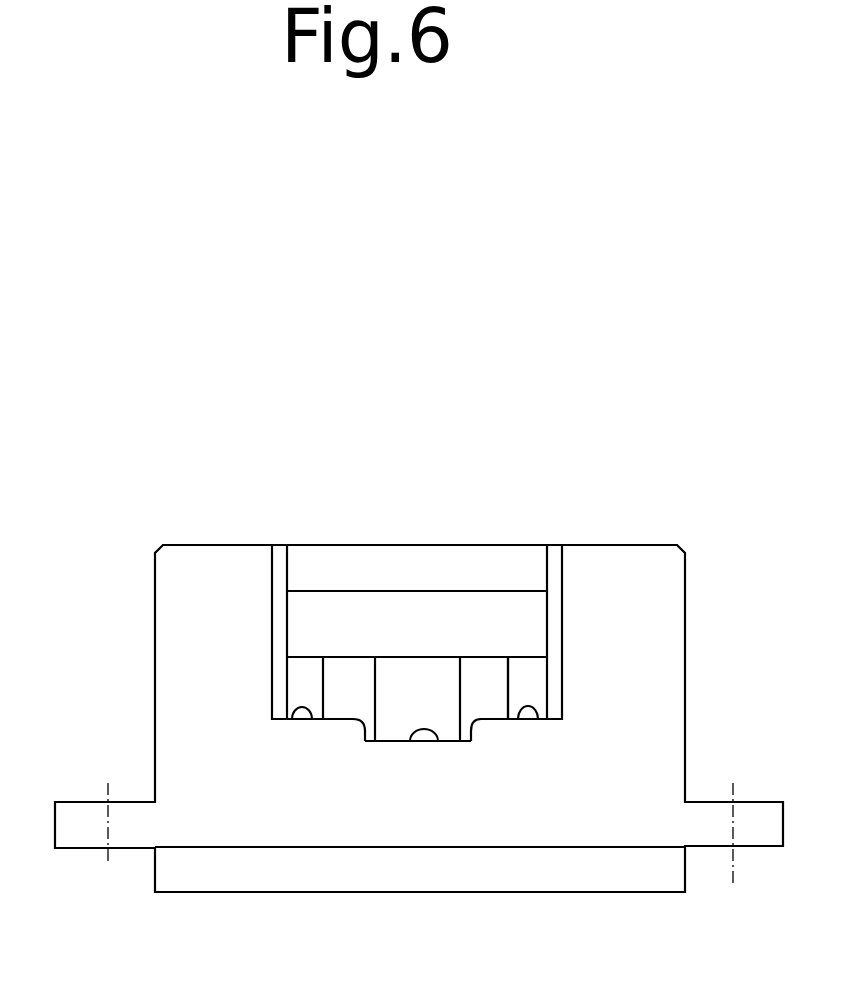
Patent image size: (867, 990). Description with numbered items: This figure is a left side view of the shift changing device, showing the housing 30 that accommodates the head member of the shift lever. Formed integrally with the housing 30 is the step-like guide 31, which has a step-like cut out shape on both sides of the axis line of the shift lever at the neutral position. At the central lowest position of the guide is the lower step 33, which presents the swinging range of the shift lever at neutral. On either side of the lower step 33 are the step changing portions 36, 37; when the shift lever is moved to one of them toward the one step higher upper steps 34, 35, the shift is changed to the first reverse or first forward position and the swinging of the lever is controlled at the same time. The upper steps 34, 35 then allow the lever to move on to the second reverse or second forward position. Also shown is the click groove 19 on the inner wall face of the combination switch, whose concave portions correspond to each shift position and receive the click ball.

The housing 30 is at (218, 553).
The step-like guide 31 is at (413, 703).
The click groove 19 is at (471, 688).
The lower step 33 is at (432, 745).
The upper step 34 is at (293, 720).
The upper step 35 is at (544, 721).
The step changing portion 36 is at (360, 737).
The step changing portion 37 is at (471, 740).